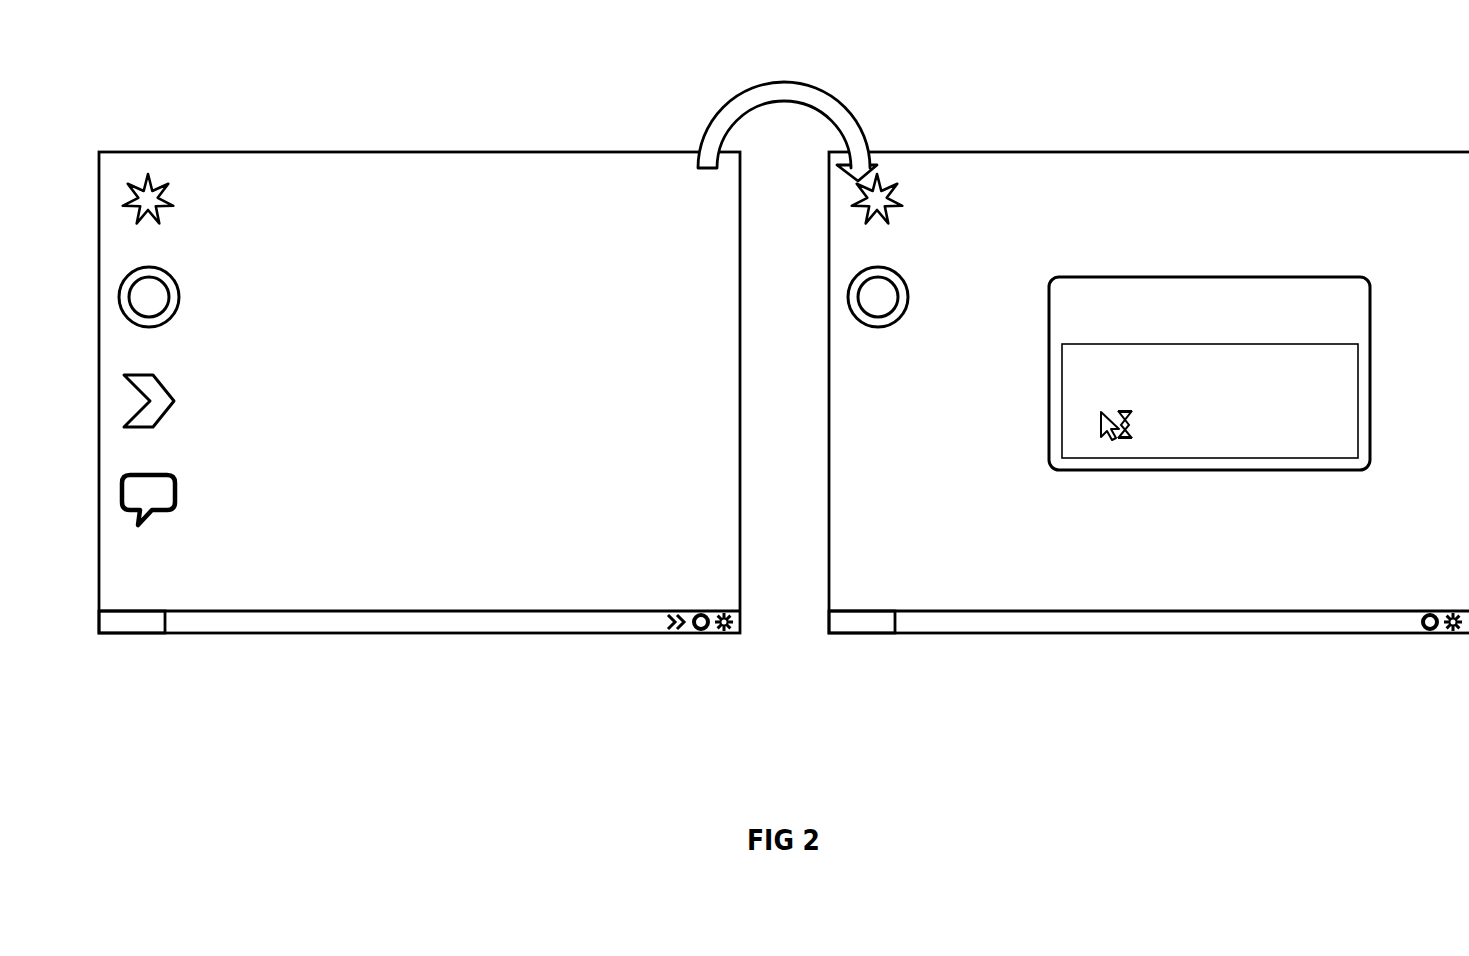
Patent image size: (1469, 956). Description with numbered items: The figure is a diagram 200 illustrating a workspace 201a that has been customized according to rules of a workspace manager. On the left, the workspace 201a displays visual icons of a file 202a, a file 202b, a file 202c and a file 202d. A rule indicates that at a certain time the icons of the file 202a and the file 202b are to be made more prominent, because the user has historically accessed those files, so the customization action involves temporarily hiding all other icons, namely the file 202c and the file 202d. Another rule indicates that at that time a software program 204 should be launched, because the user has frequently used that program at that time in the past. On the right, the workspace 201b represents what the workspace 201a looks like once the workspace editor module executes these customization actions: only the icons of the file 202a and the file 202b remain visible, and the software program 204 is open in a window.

The diagram 200 is at (806, 44).
The workspace 201a is at (419, 417).
The workspace 201b is at (1149, 417).
The file 202a is at (515, 211).
The file 202b is at (514, 308).
The file 202c is at (150, 413).
The file 202d is at (149, 512).
The software program 204 is at (1209, 373).